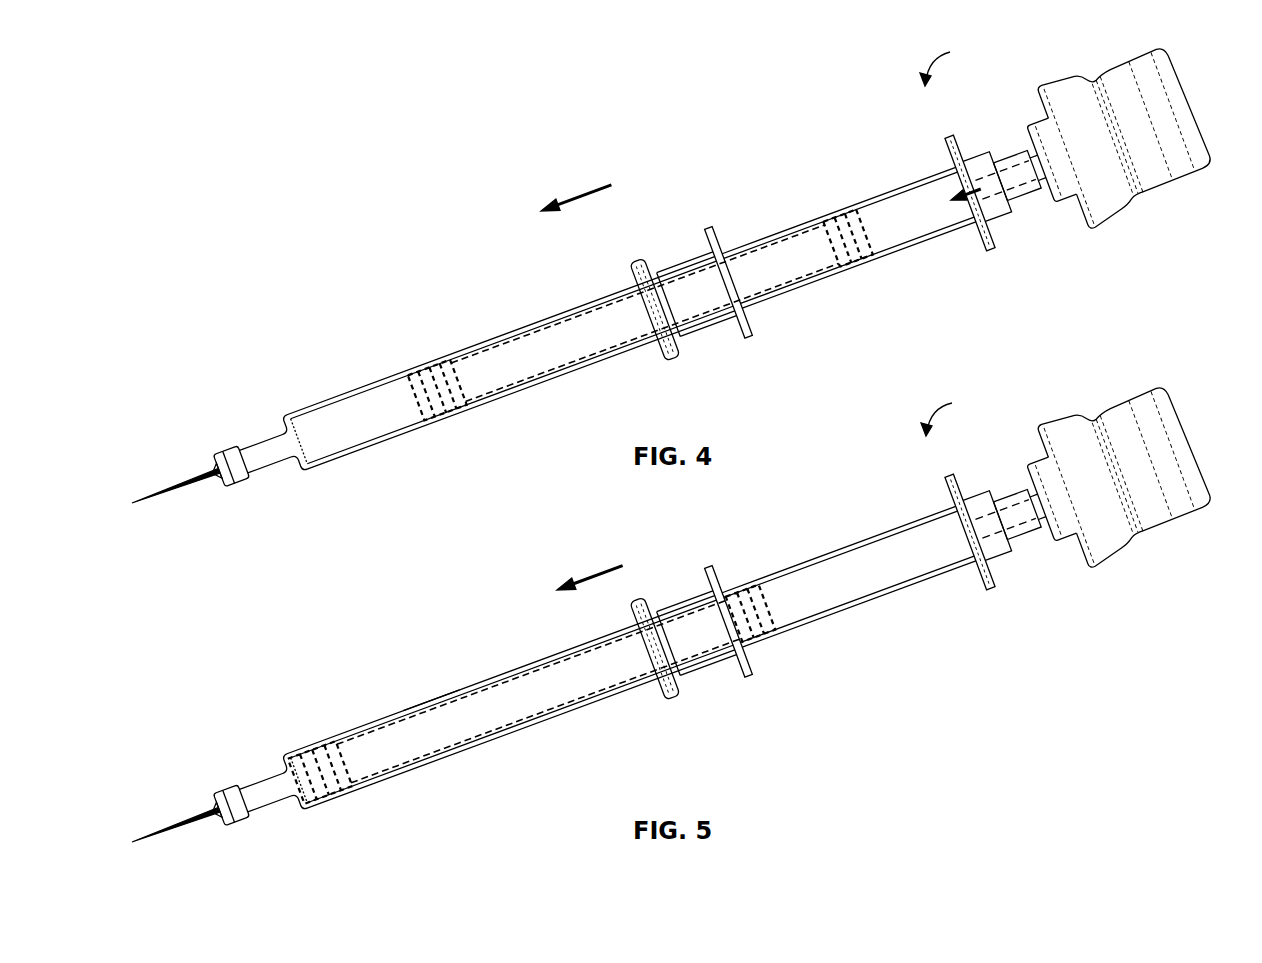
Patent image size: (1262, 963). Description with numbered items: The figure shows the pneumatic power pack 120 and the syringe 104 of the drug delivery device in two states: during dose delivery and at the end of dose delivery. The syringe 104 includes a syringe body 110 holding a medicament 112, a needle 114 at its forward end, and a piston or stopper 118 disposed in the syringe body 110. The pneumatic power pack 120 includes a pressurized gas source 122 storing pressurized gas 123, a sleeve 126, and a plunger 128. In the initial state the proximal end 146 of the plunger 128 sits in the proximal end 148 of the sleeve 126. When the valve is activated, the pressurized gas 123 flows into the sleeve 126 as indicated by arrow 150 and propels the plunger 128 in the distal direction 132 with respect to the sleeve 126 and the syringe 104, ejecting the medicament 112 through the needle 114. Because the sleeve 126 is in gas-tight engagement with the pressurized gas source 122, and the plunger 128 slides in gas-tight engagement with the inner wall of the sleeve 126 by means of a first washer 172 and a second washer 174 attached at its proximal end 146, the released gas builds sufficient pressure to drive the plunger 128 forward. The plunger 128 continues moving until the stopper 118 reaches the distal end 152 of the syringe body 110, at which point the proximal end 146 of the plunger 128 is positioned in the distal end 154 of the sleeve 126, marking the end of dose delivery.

In FIG. 4, the syringe 104 is at (541, 389).
In FIG. 5, the syringe 104 is at (363, 617).
In FIG. 4, the syringe body 110 is at (428, 358).
In FIG. 5, the syringe body 110 is at (427, 700).
In FIG. 4, the medicament 112 is at (356, 435).
In FIG. 5, the medicament 112 is at (512, 701).
In FIG. 4, the needle 114 is at (181, 481).
In FIG. 5, the needle 114 is at (180, 818).
In FIG. 4, the stopper 118 is at (445, 410).
In FIG. 5, the stopper 118 is at (340, 795).
In FIG. 4, the pneumatic power pack 120 is at (955, 63).
In FIG. 5, the pneumatic power pack 120 is at (957, 413).
In FIG. 4, the pressurized gas source 122 is at (1192, 188).
In FIG. 5, the pressurized gas source 122 is at (1192, 530).
In FIG. 4, the pressurized gas 123 is at (933, 227).
In FIG. 5, the pressurized gas 123 is at (874, 585).
In FIG. 4, the sleeve 126 is at (943, 241).
In FIG. 5, the sleeve 126 is at (943, 580).
In FIG. 4, the plunger 128 is at (605, 346).
In FIG. 5, the plunger 128 is at (605, 685).
In FIG. 4, the distal direction 132 is at (598, 188).
In FIG. 5, the distal direction 132 is at (596, 572).
In FIG. 4, the proximal end of plunger 146 is at (867, 259).
In FIG. 5, the proximal end of plunger 146 is at (763, 640).
In FIG. 4, the proximal end of the sleeve 148 is at (1001, 220).
In FIG. 5, the proximal end of the sleeve 148 is at (1001, 559).
In FIG. 4, the arrow 150 is at (985, 185).
In FIG. 5, the arrow 150 is at (970, 532).
In FIG. 5, the distal end of the syringe body 152 is at (313, 810).
In FIG. 4, the distal end of sleeve 154 is at (692, 262).
In FIG. 5, the distal end of sleeve 154 is at (688, 603).
In FIG. 4, the first washer 172 is at (840, 208).
In FIG. 4, the second washer 174 is at (847, 208).